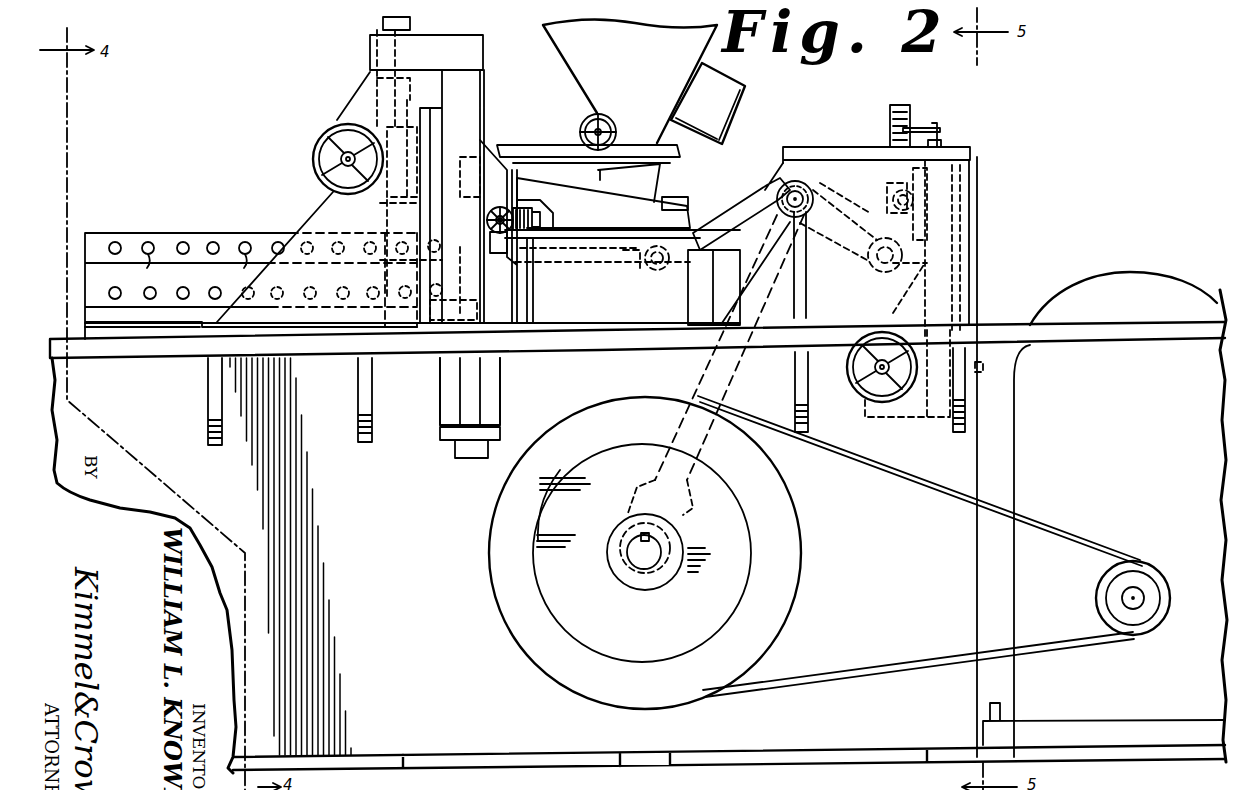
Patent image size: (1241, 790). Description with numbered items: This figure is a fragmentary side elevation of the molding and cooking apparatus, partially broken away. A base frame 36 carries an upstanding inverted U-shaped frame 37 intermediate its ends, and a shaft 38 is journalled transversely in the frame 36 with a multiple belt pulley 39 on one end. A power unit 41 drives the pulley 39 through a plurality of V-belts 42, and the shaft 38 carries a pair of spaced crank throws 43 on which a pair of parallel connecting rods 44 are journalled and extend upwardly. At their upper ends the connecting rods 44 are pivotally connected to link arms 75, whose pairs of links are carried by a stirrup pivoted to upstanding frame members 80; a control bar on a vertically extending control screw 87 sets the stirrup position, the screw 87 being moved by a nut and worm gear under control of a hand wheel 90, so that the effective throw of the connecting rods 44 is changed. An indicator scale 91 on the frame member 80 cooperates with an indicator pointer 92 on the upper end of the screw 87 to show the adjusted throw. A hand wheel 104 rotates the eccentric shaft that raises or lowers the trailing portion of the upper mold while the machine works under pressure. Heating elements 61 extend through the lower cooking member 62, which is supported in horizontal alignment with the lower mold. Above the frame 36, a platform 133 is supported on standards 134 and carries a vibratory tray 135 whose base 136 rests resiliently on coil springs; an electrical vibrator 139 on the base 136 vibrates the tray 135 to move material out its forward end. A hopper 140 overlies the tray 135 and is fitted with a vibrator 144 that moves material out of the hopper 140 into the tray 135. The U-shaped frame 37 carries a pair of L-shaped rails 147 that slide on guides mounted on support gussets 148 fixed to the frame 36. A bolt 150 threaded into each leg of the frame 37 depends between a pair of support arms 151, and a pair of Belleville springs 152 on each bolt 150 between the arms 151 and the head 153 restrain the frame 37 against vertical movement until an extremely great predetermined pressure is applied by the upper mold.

The base frame 36 is at (818, 737).
The upstanding inverted U-shaped frame 37 is at (370, 50).
The shaft 38 is at (645, 563).
The multiple belt pulley 39 is at (777, 613).
The power unit 41 is at (1143, 573).
The V-belts 42 is at (943, 497).
The crank throws 43 is at (690, 525).
The connecting rods 44 is at (730, 397).
The heating elements 61 is at (212, 275).
The lower cooking member 62 is at (145, 300).
The link arms 75 is at (723, 210).
The upstanding frame members 80 is at (815, 170).
The control screw 87 is at (947, 147).
The hand wheel 90 is at (853, 387).
The indicator scale 91 is at (908, 105).
The indicator pointer 92 is at (922, 128).
The hand wheel 104 is at (313, 157).
The platform 133 is at (570, 225).
The standards 134 is at (680, 298).
The vibratory tray 135 is at (537, 145).
The base 136 is at (607, 177).
The electrical vibrator 139 is at (668, 200).
The hopper 140 is at (573, 53).
The vibrator 144 is at (722, 117).
The L-shaped rails 147 is at (440, 290).
The support gussets 148 is at (325, 312).
The bolt 150 is at (500, 390).
The support arms 151 is at (450, 397).
The Belleville springs 152 is at (442, 428).
The head 153 is at (455, 457).